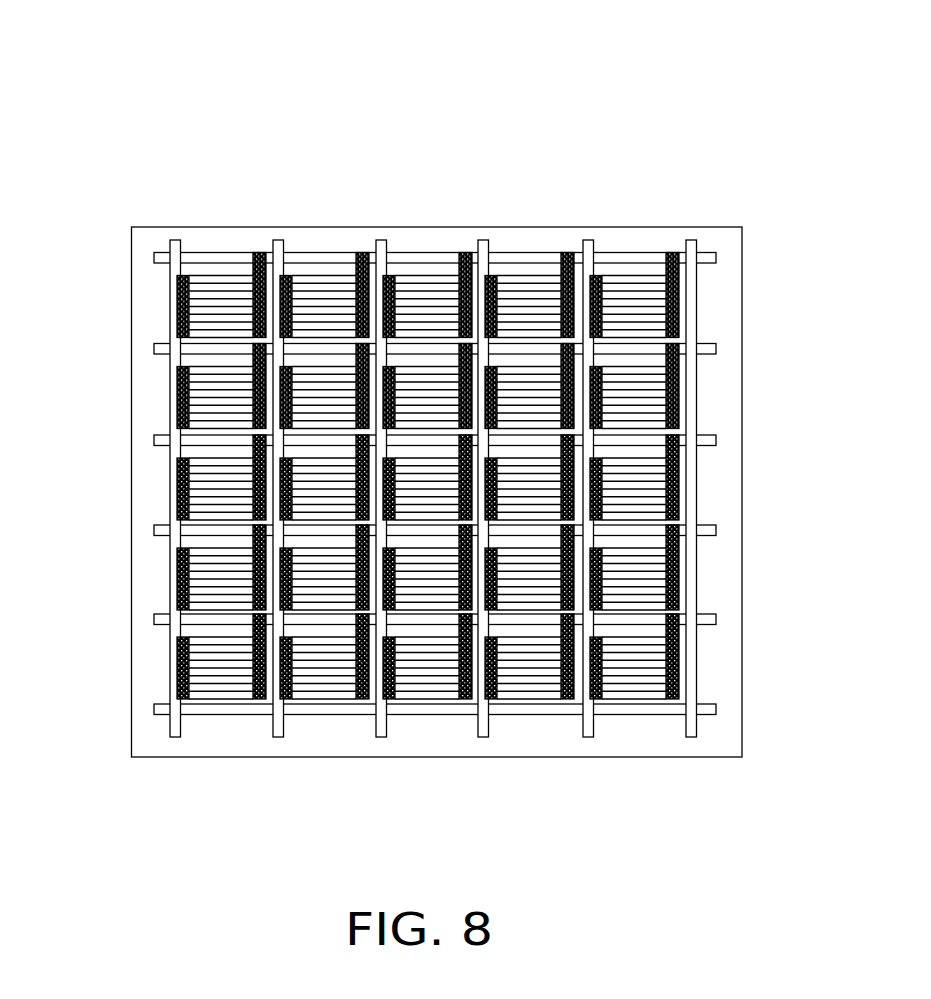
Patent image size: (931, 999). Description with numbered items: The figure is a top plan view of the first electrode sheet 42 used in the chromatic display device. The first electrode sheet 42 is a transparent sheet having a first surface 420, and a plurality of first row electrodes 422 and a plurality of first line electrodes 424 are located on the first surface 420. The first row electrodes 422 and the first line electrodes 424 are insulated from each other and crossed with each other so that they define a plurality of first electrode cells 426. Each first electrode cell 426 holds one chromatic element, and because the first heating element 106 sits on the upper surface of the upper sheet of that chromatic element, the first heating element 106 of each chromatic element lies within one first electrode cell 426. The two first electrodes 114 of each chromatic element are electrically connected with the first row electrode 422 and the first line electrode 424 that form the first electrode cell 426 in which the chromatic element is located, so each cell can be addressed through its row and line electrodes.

The first electrode sheet 42 is at (437, 72).
The first surface 420 is at (441, 235).
The first row electrodes 422 is at (711, 345).
The first line electrodes 424 is at (692, 289).
The first electrode cells 426 is at (632, 270).
The first electrodes 114 is at (262, 258).
The first heating element 106 is at (314, 277).